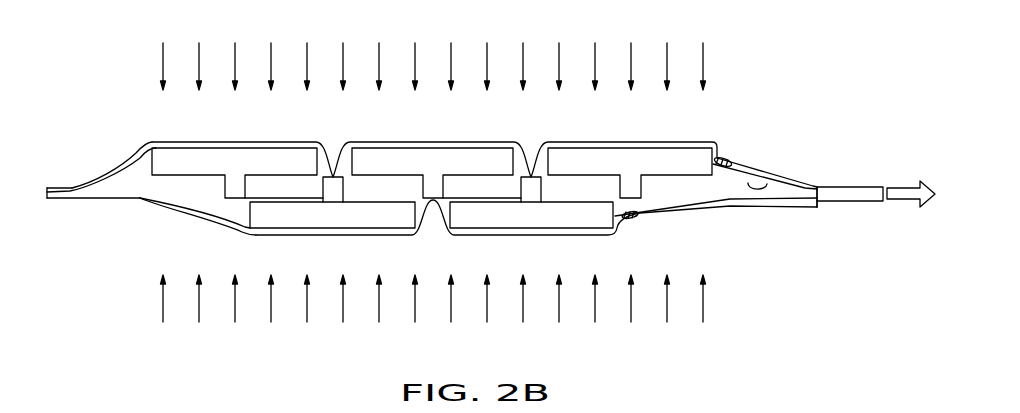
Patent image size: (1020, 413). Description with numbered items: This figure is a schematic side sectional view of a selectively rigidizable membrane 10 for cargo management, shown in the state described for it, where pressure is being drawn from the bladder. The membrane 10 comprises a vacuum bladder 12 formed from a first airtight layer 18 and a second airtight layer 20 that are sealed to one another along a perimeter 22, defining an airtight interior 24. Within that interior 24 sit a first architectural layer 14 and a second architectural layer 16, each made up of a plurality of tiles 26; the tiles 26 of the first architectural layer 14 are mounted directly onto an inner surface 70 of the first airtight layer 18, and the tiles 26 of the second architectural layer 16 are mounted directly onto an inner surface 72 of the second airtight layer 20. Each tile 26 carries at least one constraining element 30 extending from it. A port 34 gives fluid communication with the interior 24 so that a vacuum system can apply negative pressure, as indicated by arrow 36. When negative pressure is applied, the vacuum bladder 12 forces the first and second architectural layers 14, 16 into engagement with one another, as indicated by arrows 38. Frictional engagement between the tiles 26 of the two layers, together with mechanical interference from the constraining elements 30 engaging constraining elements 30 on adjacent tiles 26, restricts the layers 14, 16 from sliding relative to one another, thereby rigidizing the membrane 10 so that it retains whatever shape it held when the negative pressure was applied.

The selectively rigidizable membrane 10 is at (125, 273).
The vacuum bladder 12 is at (80, 202).
The first architectural layer 14 is at (740, 162).
The second architectural layer 16 is at (646, 214).
The first airtight layer 18 is at (122, 178).
The second airtight layer 20 is at (117, 198).
The perimeter 22 is at (57, 188).
The airtight interior 24 is at (170, 185).
The tiles 26 is at (212, 163).
The constraining element 30 is at (332, 176).
The port 34 is at (847, 187).
The arrow 36 is at (903, 206).
The arrows 38 is at (198, 58).
The inner surface of the first airtight layer 70 is at (767, 188).
The inner surface of the second airtight layer 72 is at (138, 190).